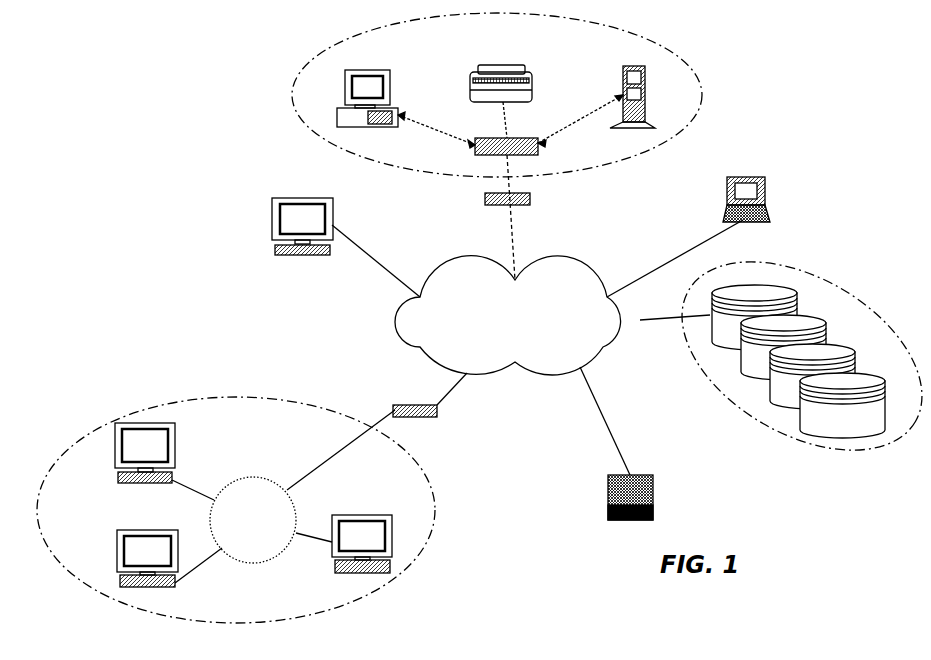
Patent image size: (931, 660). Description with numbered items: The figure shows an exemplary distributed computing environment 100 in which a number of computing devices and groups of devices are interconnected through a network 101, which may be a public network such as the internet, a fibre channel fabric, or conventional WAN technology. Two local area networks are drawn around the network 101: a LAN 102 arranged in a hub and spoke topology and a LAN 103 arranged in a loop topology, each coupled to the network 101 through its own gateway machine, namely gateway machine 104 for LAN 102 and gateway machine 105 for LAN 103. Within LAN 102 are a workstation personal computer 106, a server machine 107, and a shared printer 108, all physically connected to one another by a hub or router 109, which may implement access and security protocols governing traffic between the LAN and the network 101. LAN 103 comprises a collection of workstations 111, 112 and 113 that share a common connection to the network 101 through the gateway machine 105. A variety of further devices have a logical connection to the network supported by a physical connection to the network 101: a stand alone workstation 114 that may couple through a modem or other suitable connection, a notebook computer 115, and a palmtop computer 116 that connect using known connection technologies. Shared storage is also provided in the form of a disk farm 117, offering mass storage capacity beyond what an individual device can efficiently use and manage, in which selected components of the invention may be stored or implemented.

The computing environment 100 is at (186, 84).
The network 101 is at (402, 312).
The LAN 102 is at (305, 74).
The LAN 103 is at (250, 397).
The gateway machine 104 is at (494, 206).
The gateway machine 105 is at (403, 405).
The personal computer 106 is at (388, 68).
The server machine 107 is at (628, 63).
The printer 108 is at (503, 68).
The hub or router 109 is at (518, 138).
The workstation 111 is at (178, 440).
The workstation 112 is at (137, 530).
The workstation 113 is at (372, 515).
The stand alone workstation 114 is at (285, 200).
The notebook computer 115 is at (745, 177).
The palmtop computer 116 is at (612, 477).
The disk farm 117 is at (798, 272).